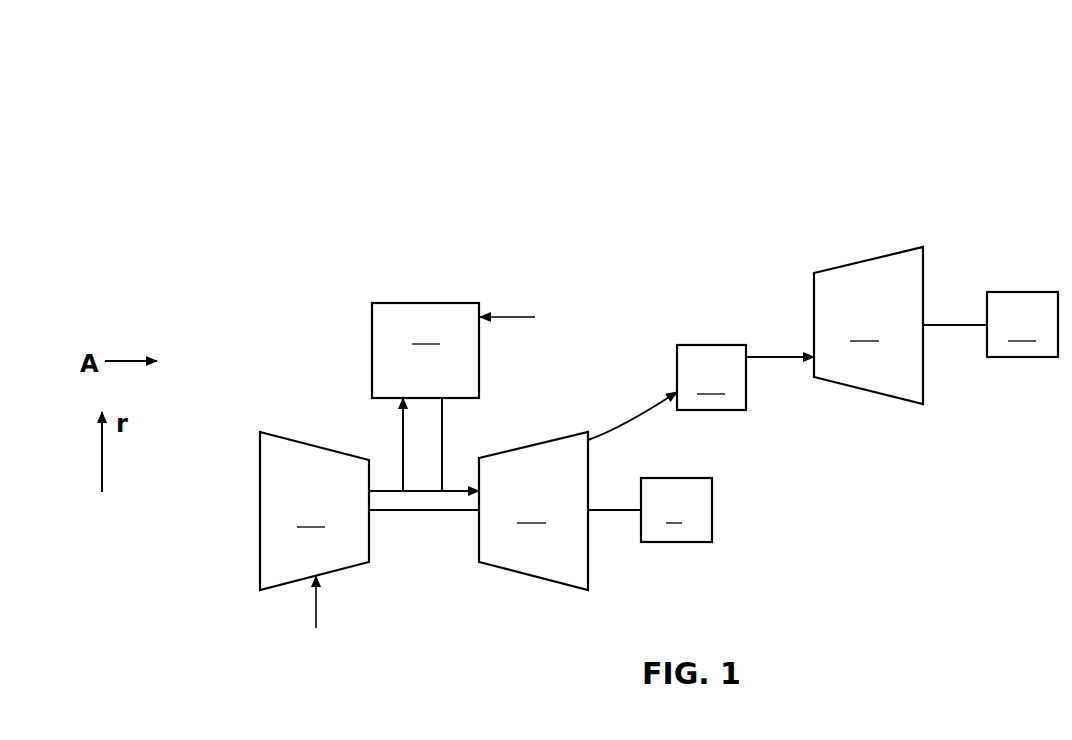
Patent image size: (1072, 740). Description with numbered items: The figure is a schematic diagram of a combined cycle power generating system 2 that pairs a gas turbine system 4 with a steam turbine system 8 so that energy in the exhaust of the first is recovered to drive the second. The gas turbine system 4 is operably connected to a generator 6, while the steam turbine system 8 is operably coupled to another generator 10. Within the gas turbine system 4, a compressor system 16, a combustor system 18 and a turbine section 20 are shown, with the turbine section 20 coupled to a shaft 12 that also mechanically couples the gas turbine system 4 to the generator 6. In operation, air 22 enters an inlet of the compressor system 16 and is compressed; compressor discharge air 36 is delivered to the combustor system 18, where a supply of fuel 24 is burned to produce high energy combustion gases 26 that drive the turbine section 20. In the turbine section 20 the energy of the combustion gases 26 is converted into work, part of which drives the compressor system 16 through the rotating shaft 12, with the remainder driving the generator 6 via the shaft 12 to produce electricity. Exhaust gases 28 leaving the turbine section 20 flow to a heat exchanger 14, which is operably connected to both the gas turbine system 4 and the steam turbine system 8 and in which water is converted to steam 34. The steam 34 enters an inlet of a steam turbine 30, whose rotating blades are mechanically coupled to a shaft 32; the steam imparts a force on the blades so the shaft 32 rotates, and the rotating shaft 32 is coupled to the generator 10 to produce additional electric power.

The combined cycle power generating system 2 is at (258, 92).
The gas turbine system 4 is at (337, 277).
The generator 6 is at (650, 510).
The steam turbine system 8 is at (772, 240).
The generator 10 is at (1022, 324).
The shaft 12 is at (432, 512).
The heat exchanger 14 is at (711, 377).
The compressor system 16 is at (314, 511).
The combustor system 18 is at (425, 350).
The turbine section 20 is at (533, 511).
The air 22 is at (316, 600).
The fuel 24 is at (507, 315).
The combustion gases 26 is at (443, 457).
The exhaust gases 28 is at (631, 412).
The steam turbine 30 is at (868, 325).
The shaft 32 is at (948, 326).
The steam 34 is at (800, 360).
The compressor discharge air 36 is at (403, 457).